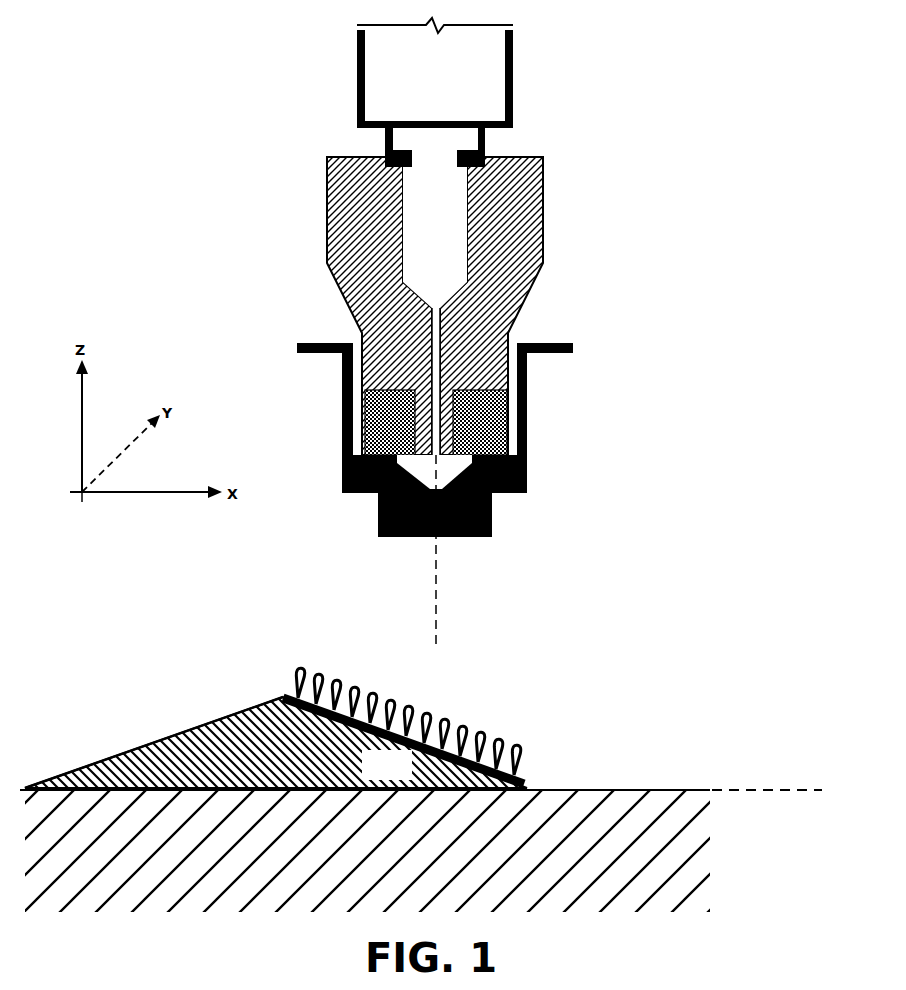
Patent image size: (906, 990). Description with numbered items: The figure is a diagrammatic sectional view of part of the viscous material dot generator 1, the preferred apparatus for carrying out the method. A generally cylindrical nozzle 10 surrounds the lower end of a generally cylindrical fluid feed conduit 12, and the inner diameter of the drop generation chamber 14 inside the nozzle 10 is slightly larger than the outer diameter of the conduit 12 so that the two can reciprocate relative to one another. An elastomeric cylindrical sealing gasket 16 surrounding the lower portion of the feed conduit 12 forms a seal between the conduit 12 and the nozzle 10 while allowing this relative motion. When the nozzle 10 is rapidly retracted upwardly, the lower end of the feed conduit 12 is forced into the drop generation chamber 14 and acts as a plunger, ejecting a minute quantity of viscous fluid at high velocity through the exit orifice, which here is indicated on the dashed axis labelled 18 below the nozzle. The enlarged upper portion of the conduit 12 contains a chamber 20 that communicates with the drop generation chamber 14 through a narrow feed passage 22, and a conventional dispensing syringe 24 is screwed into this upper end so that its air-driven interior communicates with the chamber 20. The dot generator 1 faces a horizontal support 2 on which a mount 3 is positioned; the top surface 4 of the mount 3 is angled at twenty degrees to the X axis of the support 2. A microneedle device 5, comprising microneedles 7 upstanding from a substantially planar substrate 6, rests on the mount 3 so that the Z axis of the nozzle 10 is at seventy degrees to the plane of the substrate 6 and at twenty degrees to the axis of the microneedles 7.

The viscous material dot generator 1 is at (593, 190).
The horizontal support 2 is at (706, 790).
The mount 3 is at (153, 738).
The top surface 4 is at (283, 695).
The microneedle device 5 is at (476, 702).
The substrate 6 is at (521, 777).
The microneedles 7 is at (526, 760).
The nozzle 10 is at (478, 537).
The fluid feed conduit 12 is at (510, 295).
The drop generation chamber 14 is at (434, 472).
The elastomeric cylindrical sealing gasket 16 is at (507, 417).
The extruded jet 18 is at (434, 575).
The chamber 20 is at (435, 224).
The narrow feed passage 22 is at (433, 328).
The dispensing syringe 24 is at (353, 113).